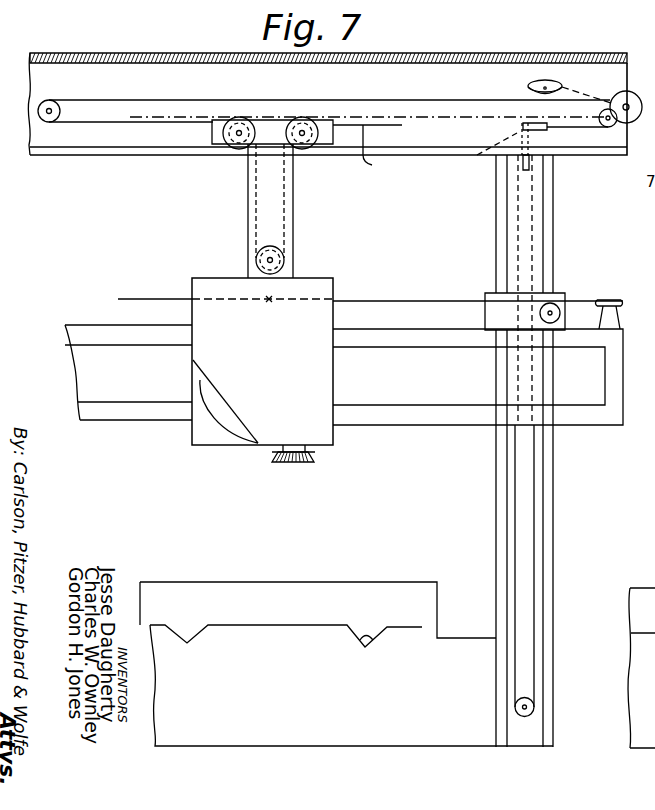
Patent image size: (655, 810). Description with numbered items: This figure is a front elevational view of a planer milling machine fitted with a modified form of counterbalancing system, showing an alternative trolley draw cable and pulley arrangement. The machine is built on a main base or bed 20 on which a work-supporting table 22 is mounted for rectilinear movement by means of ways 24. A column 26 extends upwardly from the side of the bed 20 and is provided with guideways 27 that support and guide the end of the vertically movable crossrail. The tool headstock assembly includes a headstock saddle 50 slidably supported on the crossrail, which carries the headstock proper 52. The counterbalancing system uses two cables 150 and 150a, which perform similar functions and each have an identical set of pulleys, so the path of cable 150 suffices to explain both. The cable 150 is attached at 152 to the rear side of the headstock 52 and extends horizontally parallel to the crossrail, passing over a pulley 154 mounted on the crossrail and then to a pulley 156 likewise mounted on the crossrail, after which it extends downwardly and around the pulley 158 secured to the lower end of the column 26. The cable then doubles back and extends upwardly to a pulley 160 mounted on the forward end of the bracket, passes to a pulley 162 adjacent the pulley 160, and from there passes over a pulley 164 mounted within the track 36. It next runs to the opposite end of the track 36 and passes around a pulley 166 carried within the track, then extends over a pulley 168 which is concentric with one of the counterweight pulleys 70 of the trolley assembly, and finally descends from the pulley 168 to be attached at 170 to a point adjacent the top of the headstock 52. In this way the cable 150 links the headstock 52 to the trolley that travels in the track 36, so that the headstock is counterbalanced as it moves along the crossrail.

The track 36 is at (532, 56).
The pulley 166 is at (52, 100).
The cable 150a is at (146, 298).
The counterweight pulley 70 is at (242, 120).
The pulley 168 is at (258, 120).
The pulley 162 is at (527, 122).
The pulley 160 is at (477, 157).
The pulley 164 is at (610, 127).
The cable 150 is at (247, 212).
The attachment point 170 is at (246, 276).
The attachment point 152 is at (270, 299).
The headstock saddle 50 is at (213, 442).
The headstock 52 is at (333, 446).
The pulley 156 is at (554, 303).
The pulley 154 is at (611, 299).
The column 26 is at (554, 546).
The guideways 27 is at (502, 527).
The work-supporting table 22 is at (355, 581).
The bed 20 is at (231, 691).
The ways 24 is at (361, 638).
The pulley 158 is at (531, 713).